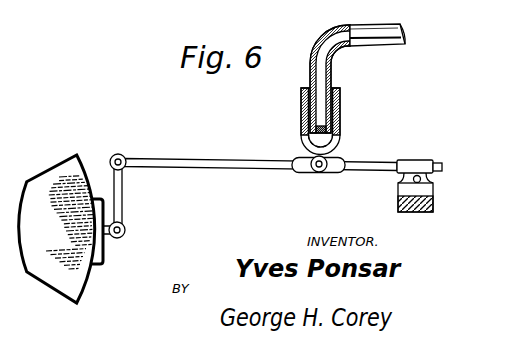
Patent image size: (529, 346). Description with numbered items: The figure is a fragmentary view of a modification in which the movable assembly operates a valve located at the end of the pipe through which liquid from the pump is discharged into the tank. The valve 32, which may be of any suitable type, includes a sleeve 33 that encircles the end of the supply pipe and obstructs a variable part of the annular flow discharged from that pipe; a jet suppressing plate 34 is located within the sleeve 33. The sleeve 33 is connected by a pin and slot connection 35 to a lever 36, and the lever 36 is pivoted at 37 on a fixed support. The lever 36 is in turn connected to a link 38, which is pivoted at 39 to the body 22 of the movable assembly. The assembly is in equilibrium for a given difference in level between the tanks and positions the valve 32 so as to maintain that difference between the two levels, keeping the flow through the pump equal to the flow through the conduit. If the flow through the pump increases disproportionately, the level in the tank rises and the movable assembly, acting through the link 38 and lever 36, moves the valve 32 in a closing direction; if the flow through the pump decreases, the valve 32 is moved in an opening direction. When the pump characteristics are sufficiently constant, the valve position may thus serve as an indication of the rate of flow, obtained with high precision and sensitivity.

The body 22 is at (47, 277).
The valve 32 is at (301, 107).
The sleeve 33 is at (340, 97).
The jet suppressing plate 34 is at (333, 134).
The pin and slot connection 35 is at (333, 173).
The lever 36 is at (276, 146).
The pivot 37 is at (410, 184).
The link 38 is at (122, 197).
The pivot 39 is at (126, 229).